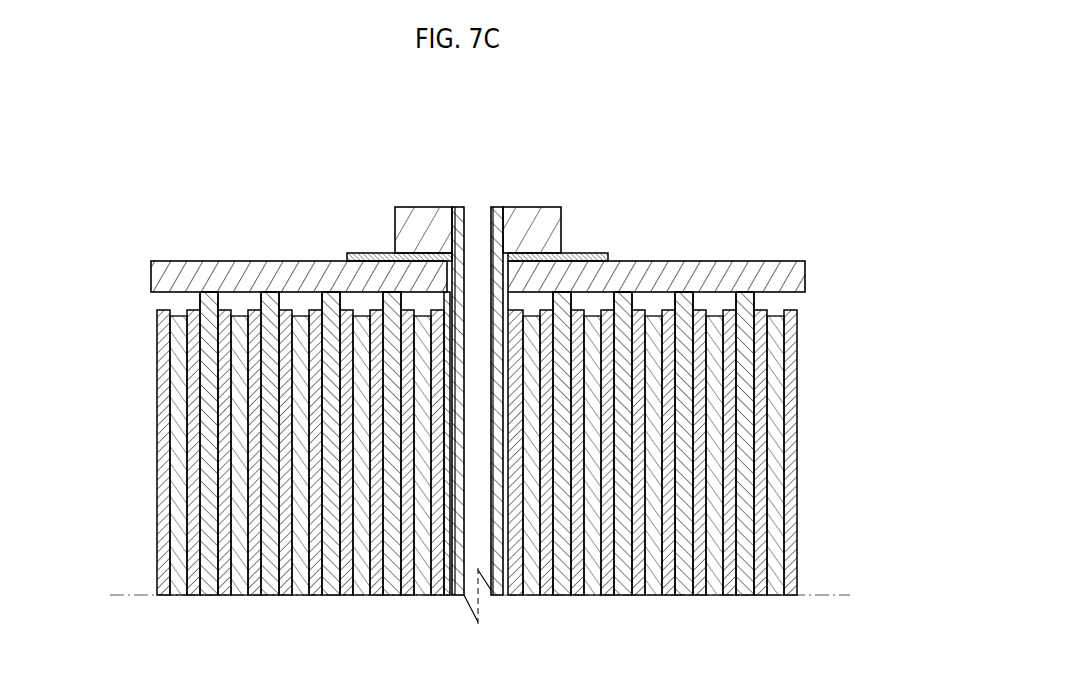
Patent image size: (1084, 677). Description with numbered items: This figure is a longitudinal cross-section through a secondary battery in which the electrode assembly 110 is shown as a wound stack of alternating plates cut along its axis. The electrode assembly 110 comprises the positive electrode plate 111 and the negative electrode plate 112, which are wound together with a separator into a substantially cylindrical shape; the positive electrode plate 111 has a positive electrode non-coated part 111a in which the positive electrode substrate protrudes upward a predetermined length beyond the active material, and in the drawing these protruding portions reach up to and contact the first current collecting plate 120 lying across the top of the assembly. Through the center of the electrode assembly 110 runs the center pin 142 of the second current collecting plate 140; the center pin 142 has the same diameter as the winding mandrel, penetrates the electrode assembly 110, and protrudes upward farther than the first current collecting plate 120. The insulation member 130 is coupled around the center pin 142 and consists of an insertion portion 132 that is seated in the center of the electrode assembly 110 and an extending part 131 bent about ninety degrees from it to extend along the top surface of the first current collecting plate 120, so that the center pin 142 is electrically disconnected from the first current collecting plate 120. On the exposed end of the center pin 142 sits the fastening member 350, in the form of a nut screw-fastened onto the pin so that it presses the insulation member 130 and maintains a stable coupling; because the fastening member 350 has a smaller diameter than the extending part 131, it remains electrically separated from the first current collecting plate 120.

The electrode assembly 110 is at (530, 442).
The positive electrode plate 111 is at (757, 362).
The positive electrode non-coated part 111a is at (762, 301).
The negative electrode plate 112 is at (773, 552).
The first current collecting plate 120 is at (180, 272).
The insulation member 130 is at (502, 209).
The extending part 131 is at (582, 253).
The insertion portion 132 is at (512, 300).
The second current collecting plate 140 is at (495, 485).
The center pin 142 is at (455, 213).
The fastening member 350 is at (525, 217).